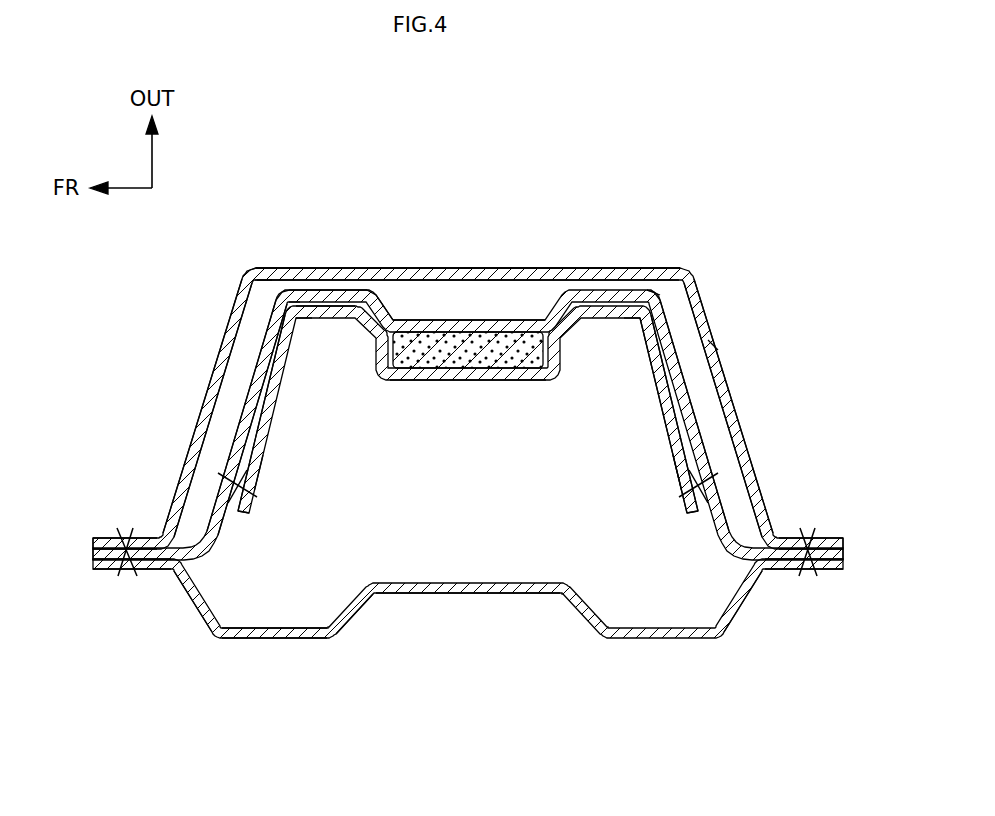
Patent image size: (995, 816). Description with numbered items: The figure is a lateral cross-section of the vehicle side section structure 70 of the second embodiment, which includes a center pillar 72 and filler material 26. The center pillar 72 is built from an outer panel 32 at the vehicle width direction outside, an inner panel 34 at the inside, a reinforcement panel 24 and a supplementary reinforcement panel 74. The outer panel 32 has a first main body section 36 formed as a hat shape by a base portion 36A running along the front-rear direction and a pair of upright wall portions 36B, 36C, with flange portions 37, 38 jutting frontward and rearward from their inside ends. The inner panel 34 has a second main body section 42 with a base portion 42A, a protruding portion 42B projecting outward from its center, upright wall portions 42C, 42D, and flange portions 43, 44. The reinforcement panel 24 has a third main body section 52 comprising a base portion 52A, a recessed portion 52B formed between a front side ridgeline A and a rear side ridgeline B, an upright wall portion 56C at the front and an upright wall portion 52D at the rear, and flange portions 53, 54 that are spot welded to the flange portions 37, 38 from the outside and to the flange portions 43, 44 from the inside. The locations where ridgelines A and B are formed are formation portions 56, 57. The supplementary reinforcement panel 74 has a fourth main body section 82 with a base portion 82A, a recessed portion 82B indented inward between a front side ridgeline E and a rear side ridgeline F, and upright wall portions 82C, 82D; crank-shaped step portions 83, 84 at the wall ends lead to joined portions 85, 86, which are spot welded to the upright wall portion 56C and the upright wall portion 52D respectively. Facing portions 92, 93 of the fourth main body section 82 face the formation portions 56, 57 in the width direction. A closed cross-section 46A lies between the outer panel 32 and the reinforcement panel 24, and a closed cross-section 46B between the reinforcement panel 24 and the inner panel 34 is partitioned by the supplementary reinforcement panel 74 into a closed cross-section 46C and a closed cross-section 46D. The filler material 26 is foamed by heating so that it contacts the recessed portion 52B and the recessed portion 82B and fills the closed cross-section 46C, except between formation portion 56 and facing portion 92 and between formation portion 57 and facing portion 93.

The reinforcement panel 24 is at (383, 289).
The filler material 26 is at (545, 352).
The outer panel 32 is at (244, 265).
The inner panel 34 is at (265, 641).
The first main body section 36 is at (443, 266).
The base portion 36A is at (476, 266).
The upright wall portion 36B is at (216, 345).
The upright wall portion 36C is at (729, 373).
The flange portion 37 is at (107, 532).
The flange portion 38 is at (830, 536).
The second main body section 42 is at (307, 640).
The base portion 42A is at (227, 640).
The protruding portion 42B is at (507, 580).
The upright wall portion 42C is at (190, 603).
The upright wall portion 42D is at (734, 627).
The flange portion 43 is at (107, 572).
The flange portion 44 is at (834, 572).
The closed cross-section 46A is at (205, 441).
The closed cross-section 46B is at (349, 574).
The closed cross-section 46C is at (605, 300).
The closed cross-section 46D is at (352, 490).
The third main body section 52 is at (577, 289).
The base portion 52A is at (331, 289).
The recessed portion 52B is at (505, 319).
The upright wall portion 52D is at (700, 424).
The flange portion 53 is at (91, 547).
The flange portion 54 is at (845, 549).
The formation portion 56 is at (289, 289).
The upright wall portion 56C is at (246, 394).
The formation portion 57 is at (649, 290).
The vehicle side section structure 70 is at (669, 160).
The center pillar 72 is at (718, 326).
The supplementary reinforcement panel 74 is at (658, 428).
The fourth main body section 82 is at (397, 383).
The base portion 82A is at (331, 329).
The recessed portion 82B is at (465, 383).
The upright wall portion 82C is at (282, 427).
The upright wall portion 82D is at (642, 393).
The step portion 83 is at (265, 448).
The step portion 84 is at (669, 454).
The joined portion 85 is at (243, 512).
The joined portion 86 is at (688, 513).
The facing portion 92 is at (301, 328).
The facing portion 93 is at (633, 333).
The front side ridgeline A is at (272, 281).
The rear side ridgeline B is at (661, 295).
The front side ridgeline E is at (280, 304).
The rear side ridgeline F is at (718, 350).